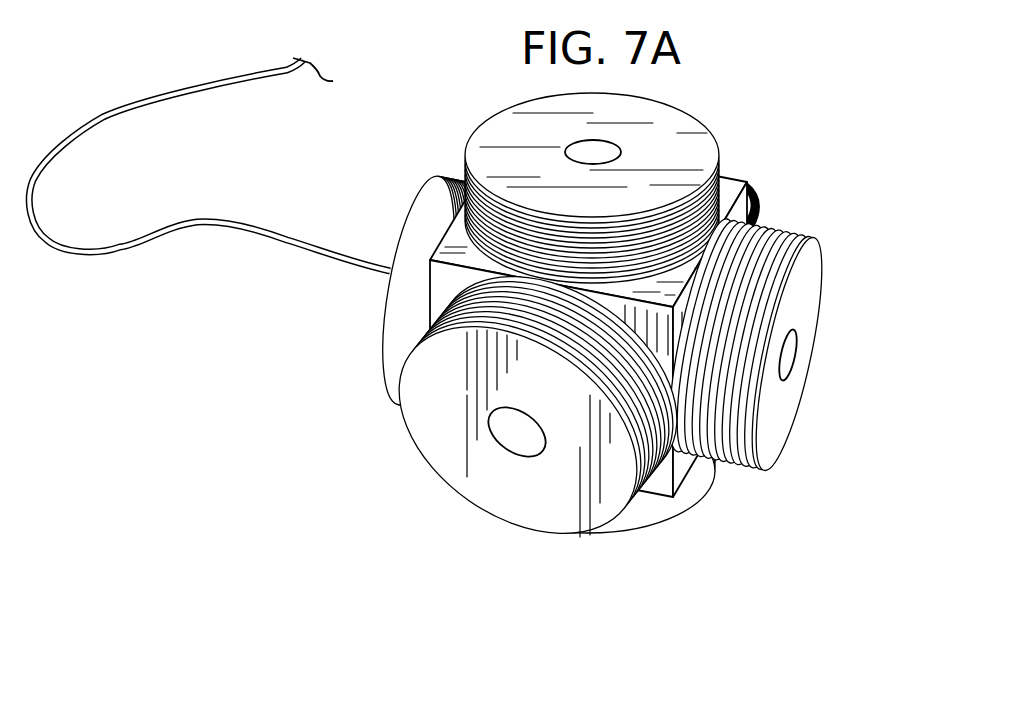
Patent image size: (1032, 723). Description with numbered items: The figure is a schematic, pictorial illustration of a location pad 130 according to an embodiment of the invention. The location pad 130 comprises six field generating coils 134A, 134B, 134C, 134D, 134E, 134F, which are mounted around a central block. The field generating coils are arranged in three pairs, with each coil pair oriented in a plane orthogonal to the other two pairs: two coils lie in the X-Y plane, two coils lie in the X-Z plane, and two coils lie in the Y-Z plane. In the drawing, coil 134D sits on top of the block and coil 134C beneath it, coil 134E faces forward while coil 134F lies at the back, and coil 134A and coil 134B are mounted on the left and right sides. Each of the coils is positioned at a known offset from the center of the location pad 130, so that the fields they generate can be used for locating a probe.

The location pad 130 is at (780, 88).
The field generating coil 134A is at (375, 318).
The field generating coil 134B is at (800, 313).
The field generating coil 134C is at (660, 510).
The field generating coil 134D is at (495, 143).
The field generating coil 134E is at (430, 417).
The field generating coil 134F is at (750, 207).